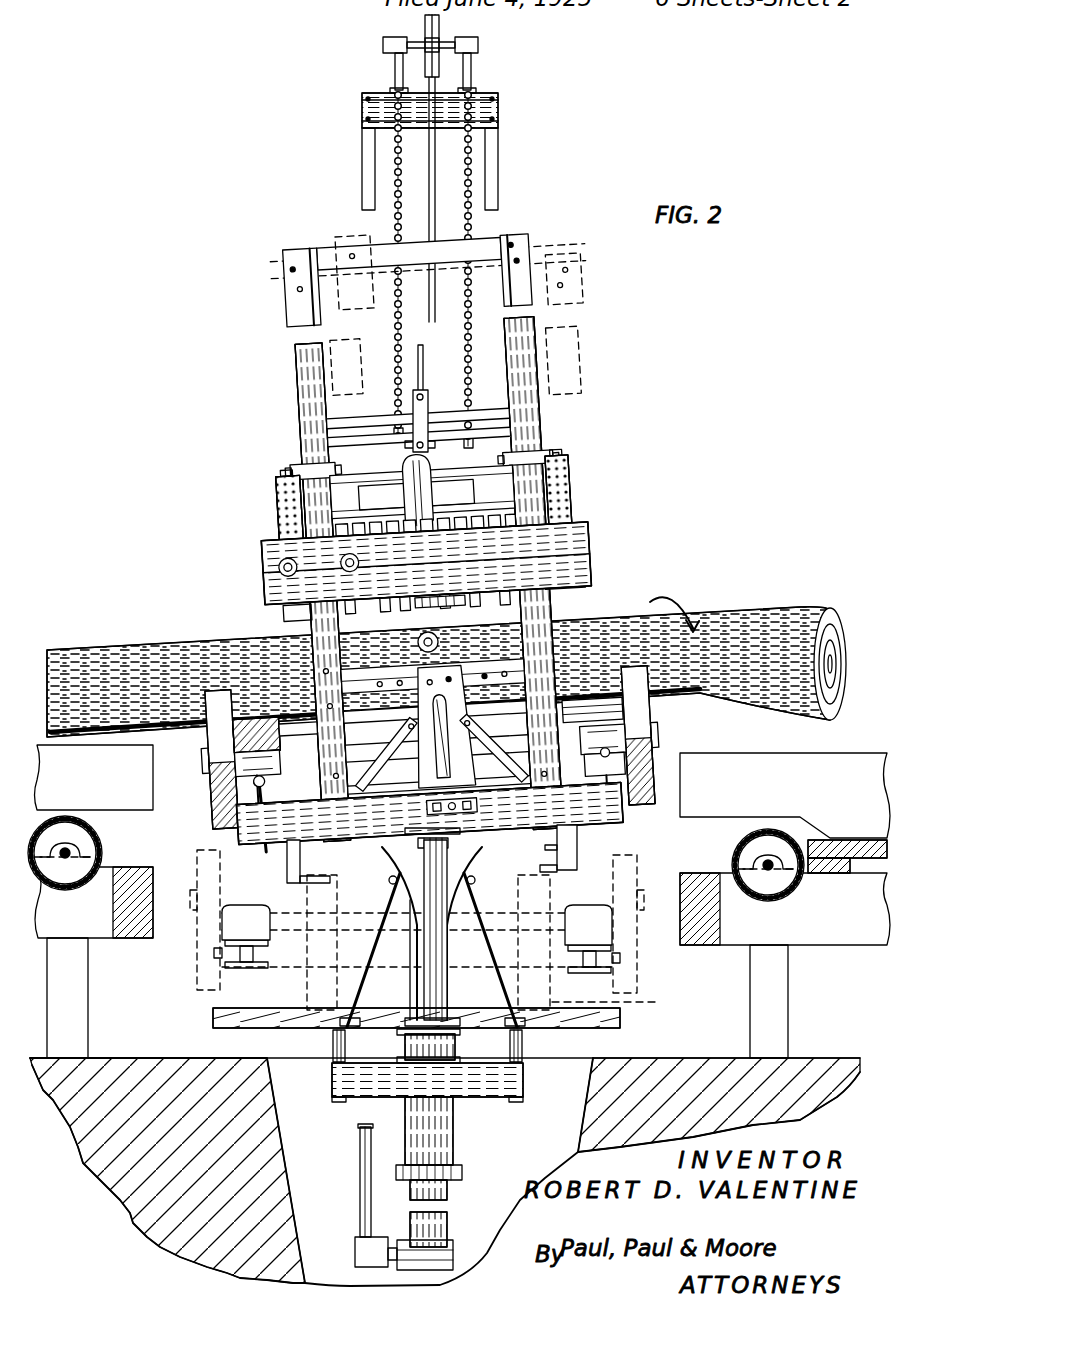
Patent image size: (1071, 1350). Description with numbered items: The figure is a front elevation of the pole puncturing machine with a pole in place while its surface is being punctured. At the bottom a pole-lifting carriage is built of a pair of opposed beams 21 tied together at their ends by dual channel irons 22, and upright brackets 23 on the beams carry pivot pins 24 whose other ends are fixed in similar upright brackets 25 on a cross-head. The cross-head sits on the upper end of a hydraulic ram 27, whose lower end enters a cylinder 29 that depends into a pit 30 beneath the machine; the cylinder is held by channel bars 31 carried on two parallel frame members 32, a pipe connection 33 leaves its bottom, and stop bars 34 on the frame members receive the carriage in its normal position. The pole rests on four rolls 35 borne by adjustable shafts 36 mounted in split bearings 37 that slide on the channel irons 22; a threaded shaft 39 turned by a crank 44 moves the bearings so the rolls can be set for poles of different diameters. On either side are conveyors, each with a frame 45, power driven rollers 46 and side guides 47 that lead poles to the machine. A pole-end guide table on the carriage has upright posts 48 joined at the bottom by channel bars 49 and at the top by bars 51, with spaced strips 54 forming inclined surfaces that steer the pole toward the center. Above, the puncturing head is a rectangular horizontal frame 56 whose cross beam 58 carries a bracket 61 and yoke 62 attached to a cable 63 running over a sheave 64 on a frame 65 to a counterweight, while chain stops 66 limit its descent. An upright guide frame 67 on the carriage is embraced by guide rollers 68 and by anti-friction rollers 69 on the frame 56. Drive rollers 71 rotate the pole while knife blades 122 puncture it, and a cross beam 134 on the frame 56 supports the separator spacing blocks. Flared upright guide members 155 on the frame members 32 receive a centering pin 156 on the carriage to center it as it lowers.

The opposed beams 21 is at (600, 807).
The dual tie bars or channel irons 22 is at (243, 790).
The upright brackets 23 is at (450, 700).
The pivot pins 24 is at (428, 579).
The upright brackets 25 is at (395, 735).
The ram 27 is at (424, 990).
The cylinder 29 is at (443, 1133).
The pit 30 is at (565, 1093).
The channel bars 31 is at (363, 1083).
The frame members 32 is at (333, 1045).
The pipe connection 33 is at (360, 1200).
The stop bars 34 is at (620, 1022).
The rolls or wheels 35 is at (210, 790).
The shafts 36 is at (506, 722).
The split bearings 37 is at (240, 760).
The threaded shaft 39 is at (602, 767).
The crank 44 is at (258, 834).
The conveyor frame 45 is at (93, 927).
The power driven rollers 46 is at (97, 838).
The guides 47 is at (835, 762).
The upright posts 48 is at (590, 847).
The channel bars 49 is at (312, 857).
The bars 51 is at (257, 688).
The strips 54 is at (262, 725).
The rectangular horizontal frame 56 is at (586, 570).
The cross beam 58 is at (442, 418).
The bracket 61 is at (410, 447).
The yoke 62 is at (413, 415).
The cable 63 is at (433, 205).
The sheave 64 is at (437, 23).
The frame 65 is at (498, 110).
The adjustable stops 66 is at (396, 222).
The upright guide frame 67 is at (283, 292).
The guide rollers 68 is at (298, 463).
The anti-friction rollers 69 is at (343, 564).
The drive rollers 71 is at (278, 500).
The knife blades 122 is at (455, 610).
The cross beam 134 is at (592, 534).
The upright guide members 155 is at (397, 887).
The centering pin 156 is at (470, 832).